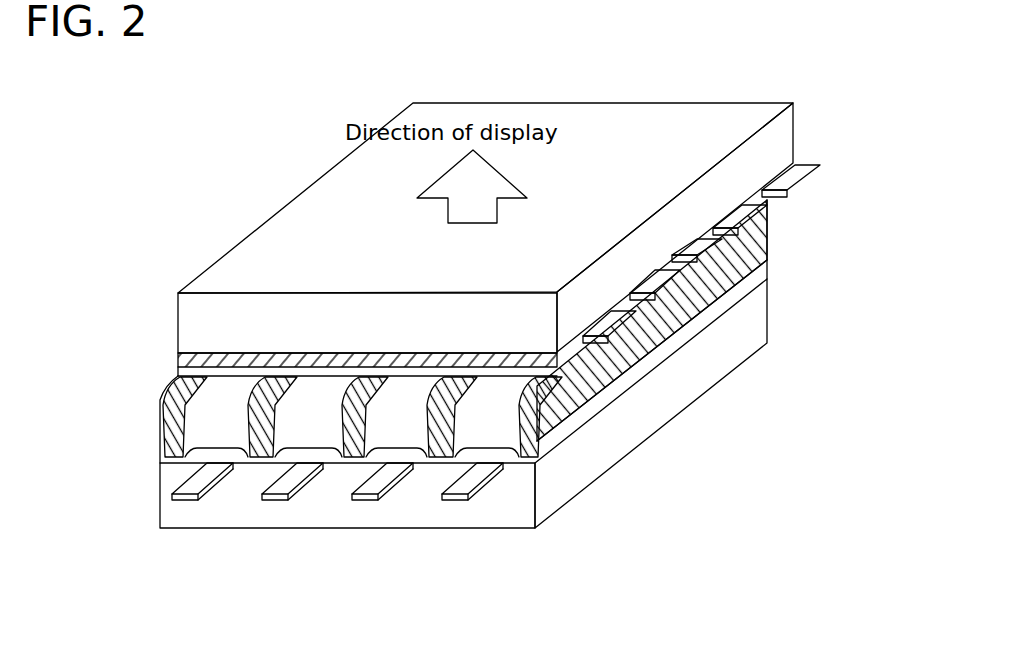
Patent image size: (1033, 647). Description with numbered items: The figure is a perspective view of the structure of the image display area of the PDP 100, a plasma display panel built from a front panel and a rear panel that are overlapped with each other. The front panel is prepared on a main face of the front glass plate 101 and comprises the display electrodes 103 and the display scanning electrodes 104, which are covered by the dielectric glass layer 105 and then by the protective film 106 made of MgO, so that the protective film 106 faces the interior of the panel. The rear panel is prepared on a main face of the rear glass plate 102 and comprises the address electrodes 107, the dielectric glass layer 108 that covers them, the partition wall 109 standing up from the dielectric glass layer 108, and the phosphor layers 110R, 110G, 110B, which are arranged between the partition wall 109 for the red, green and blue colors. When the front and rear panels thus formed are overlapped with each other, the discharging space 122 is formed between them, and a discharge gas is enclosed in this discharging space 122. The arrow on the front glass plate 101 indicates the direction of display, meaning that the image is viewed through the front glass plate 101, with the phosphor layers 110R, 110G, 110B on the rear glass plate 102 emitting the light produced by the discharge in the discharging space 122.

The PDP 100 is at (773, 310).
The front glass plate 101 is at (187, 308).
The rear glass plate 102 is at (420, 522).
The display electrodes 103 is at (578, 362).
The display scanning electrodes 104 is at (767, 232).
The dielectric glass layer 105 is at (178, 358).
The protective film 106 is at (178, 376).
The address electrodes 107 is at (198, 487).
The dielectric glass layer 108 is at (163, 464).
The partition wall 109 is at (447, 425).
The phosphor layer 110R is at (203, 450).
The phosphor layer 110G is at (307, 452).
The phosphor layer 110B is at (385, 465).
The discharging space 122 is at (502, 397).